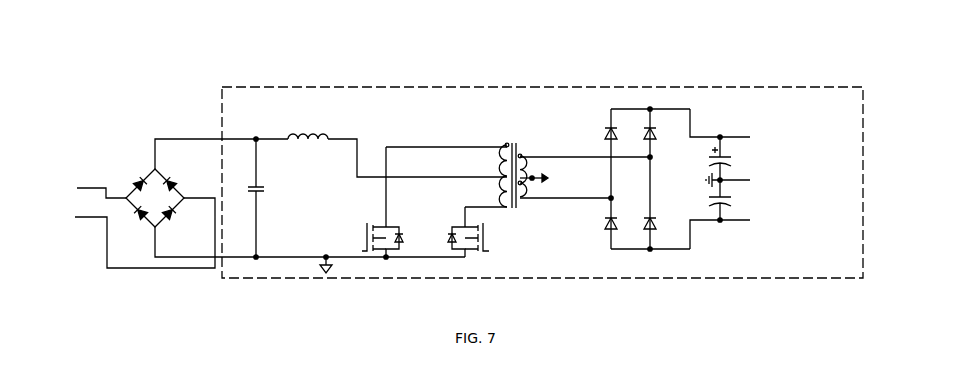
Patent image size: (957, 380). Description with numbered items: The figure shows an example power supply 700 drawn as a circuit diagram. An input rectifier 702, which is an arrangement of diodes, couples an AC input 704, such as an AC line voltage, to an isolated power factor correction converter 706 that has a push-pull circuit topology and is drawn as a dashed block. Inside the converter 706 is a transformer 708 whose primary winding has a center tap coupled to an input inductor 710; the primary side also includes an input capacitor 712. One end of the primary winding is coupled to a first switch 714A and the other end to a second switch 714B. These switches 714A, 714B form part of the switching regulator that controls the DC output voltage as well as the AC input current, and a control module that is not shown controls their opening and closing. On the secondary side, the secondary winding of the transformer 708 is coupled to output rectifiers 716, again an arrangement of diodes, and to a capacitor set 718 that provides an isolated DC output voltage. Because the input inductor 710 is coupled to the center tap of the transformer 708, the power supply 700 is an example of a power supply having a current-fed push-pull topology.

The power supply 700 is at (418, 66).
The input rectifier 702 is at (150, 175).
The AC input 704 is at (126, 233).
The isolated power factor correction converter 706 is at (542, 182).
The transformer 708 is at (558, 157).
The input inductor 710 is at (302, 142).
The input capacitor 712 is at (264, 190).
The first switch 714A is at (363, 239).
The second switch 714B is at (489, 247).
The output rectifiers 716 is at (630, 108).
The capacitor set 718 is at (705, 180).